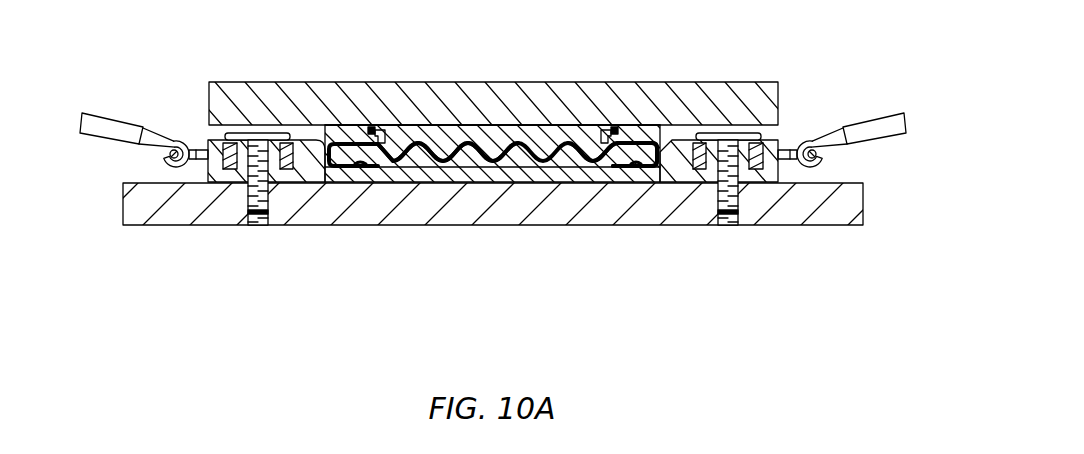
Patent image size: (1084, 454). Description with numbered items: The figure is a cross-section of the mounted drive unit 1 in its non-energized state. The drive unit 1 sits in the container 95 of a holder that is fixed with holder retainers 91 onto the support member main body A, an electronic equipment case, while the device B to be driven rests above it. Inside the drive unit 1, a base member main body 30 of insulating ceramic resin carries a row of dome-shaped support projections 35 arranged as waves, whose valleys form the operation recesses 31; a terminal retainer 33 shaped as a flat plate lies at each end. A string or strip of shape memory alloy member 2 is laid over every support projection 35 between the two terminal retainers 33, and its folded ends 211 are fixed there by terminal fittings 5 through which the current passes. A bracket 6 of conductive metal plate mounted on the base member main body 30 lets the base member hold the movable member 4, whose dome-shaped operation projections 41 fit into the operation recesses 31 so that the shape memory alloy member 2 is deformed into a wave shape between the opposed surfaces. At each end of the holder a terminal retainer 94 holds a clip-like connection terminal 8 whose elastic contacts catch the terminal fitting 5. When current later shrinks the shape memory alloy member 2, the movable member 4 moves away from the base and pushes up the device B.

The drive unit 1 is at (470, 125).
The shape memory alloy member 2 is at (498, 147).
The movable member 4 is at (545, 133).
The terminal fitting 5 is at (368, 133).
The bracket 6 is at (613, 133).
The clip-like connection terminal 8 is at (230, 169).
The base member main body 30 is at (535, 165).
The operation recess 31 is at (588, 166).
The terminal retainer 33 is at (637, 140).
The support projection 35 is at (418, 141).
The operation projection 41 is at (455, 165).
The holder retainer 91 is at (255, 226).
The terminal retainer 94 is at (303, 137).
The container 95 is at (504, 168).
The end of shape memory alloy wire 211 is at (320, 148).
The support member main body A is at (848, 227).
The device to be driven B is at (703, 82).